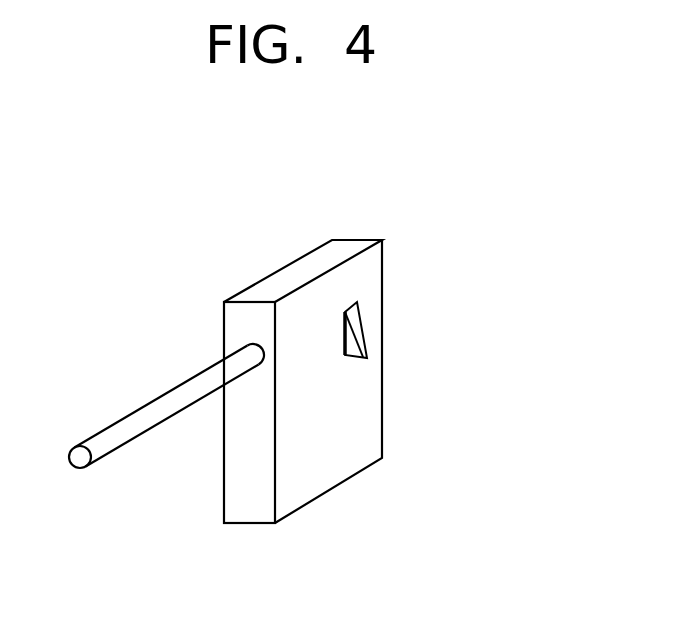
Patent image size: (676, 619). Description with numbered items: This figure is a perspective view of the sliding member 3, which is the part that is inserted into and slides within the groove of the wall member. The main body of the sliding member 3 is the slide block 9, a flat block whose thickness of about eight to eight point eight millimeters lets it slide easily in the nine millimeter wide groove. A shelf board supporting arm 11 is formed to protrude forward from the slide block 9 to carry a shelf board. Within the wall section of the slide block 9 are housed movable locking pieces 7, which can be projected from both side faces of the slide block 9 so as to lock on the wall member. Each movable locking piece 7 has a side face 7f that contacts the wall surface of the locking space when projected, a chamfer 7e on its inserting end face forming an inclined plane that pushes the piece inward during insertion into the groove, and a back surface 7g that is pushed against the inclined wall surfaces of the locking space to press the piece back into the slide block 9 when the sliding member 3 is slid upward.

The sliding member 3 is at (206, 234).
The movable locking piece 7 is at (357, 273).
The chamfer 7e is at (349, 320).
The side face 7f is at (353, 348).
The back surface 7g is at (345, 320).
The slide block 9 is at (348, 455).
The shelf board supporting arm 11 is at (157, 415).